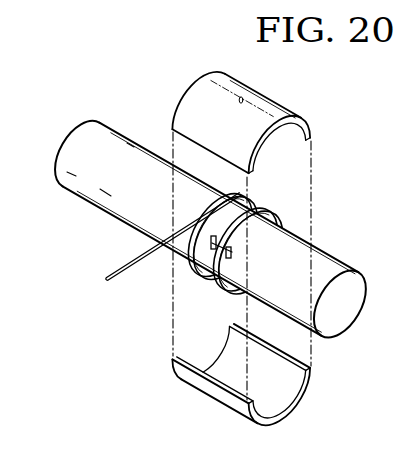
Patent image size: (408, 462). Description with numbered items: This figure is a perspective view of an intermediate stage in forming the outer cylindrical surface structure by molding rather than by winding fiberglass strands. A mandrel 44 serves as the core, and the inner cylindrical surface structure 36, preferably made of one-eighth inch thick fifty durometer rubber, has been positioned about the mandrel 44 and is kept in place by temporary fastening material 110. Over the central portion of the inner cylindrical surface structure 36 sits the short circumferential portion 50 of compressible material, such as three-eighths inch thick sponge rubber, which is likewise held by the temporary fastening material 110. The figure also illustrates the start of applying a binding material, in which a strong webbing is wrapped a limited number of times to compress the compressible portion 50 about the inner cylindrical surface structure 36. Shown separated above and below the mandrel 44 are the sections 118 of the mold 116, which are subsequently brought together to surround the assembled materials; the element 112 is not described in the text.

The mandrel 44 is at (101, 121).
The mold 116 is at (265, 91).
The section of the mold 118 is at (315, 128).
The short circumferential portion of compressible material 50 is at (265, 199).
The inner cylindrical surface structure 36 is at (286, 210).
The pin 112 is at (122, 259).
The temporary fastening material 110 is at (214, 264).